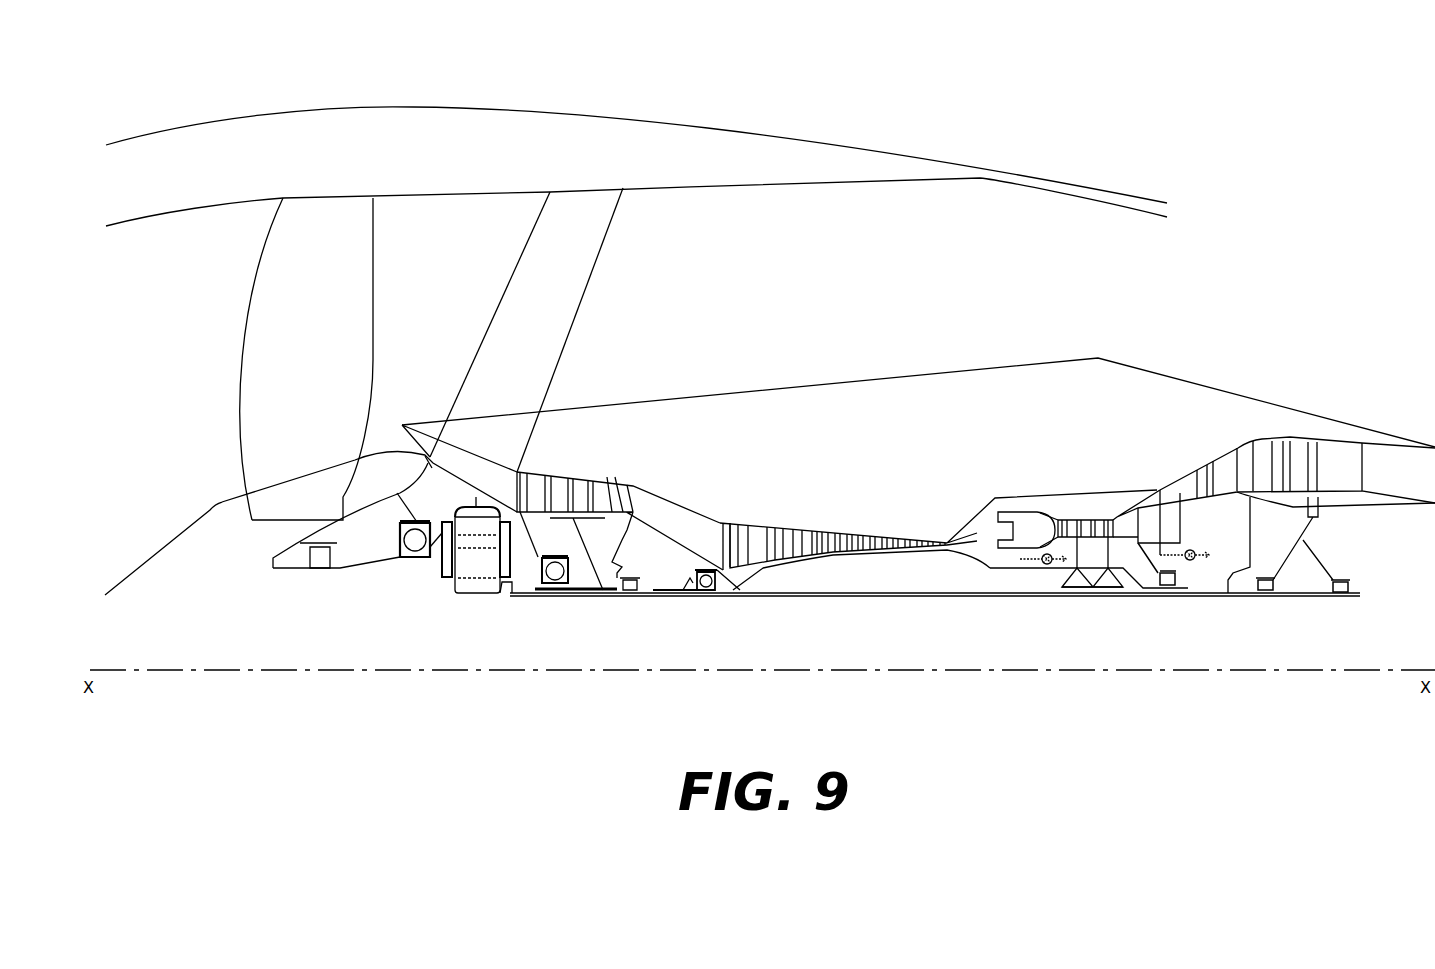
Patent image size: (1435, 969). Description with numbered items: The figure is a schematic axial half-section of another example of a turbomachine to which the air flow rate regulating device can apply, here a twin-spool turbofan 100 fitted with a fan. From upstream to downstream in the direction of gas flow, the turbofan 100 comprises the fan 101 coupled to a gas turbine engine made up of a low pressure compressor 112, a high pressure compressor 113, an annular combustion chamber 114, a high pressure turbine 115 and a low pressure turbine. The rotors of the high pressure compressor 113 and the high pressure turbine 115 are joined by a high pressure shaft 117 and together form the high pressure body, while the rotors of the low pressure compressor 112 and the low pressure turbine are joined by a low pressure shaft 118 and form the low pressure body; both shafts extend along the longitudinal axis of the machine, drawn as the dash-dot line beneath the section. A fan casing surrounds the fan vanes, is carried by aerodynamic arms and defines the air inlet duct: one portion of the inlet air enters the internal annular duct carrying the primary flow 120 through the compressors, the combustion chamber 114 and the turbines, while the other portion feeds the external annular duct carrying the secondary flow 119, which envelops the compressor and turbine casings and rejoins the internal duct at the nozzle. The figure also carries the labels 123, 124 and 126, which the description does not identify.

The turbofan 100 is at (688, 112).
The fan 101 is at (473, 575).
The low pressure compressor 112 is at (535, 603).
The high pressure compressor 113 is at (973, 603).
The annular combustion chamber 114 is at (980, 603).
The high pressure turbine 115 is at (1060, 603).
The high pressure shaft 117 is at (657, 596).
The low pressure shaft 118 is at (700, 596).
The secondary flow 119 is at (795, 462).
The primary flow 120 is at (880, 585).
The sensor 123 is at (985, 563).
The sensor 124 is at (1163, 548).
The low pressure turbine 126 is at (1172, 603).